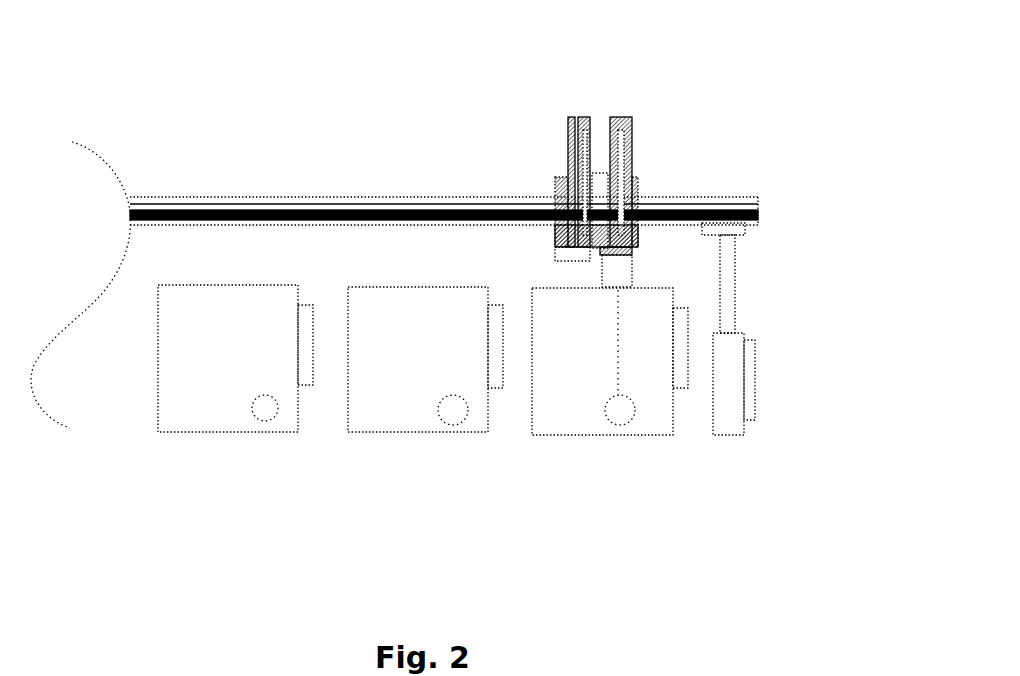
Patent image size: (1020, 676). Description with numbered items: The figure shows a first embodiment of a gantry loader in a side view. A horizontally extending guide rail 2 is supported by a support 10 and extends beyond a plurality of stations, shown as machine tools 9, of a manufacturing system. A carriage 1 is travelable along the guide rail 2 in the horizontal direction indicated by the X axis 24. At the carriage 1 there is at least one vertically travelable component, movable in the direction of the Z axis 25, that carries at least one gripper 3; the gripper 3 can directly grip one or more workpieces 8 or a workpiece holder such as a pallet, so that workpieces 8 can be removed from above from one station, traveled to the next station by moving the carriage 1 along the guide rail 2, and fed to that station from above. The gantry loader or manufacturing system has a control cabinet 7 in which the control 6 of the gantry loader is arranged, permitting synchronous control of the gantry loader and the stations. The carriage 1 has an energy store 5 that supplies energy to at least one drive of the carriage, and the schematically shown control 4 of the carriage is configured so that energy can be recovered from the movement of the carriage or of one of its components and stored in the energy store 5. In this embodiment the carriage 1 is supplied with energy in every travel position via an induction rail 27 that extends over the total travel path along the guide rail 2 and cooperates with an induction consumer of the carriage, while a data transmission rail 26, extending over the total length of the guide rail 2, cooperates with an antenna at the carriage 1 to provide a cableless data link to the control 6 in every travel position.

The carriage 1 is at (791, 67).
The guide rail 2 is at (444, 136).
The gripper 3 is at (755, 269).
The control of the carriage 4 is at (633, 166).
The energy store 5 is at (597, 172).
The control of the gantry loader 6 is at (777, 381).
The control cabinet 7 is at (786, 490).
The workpiece 8 is at (717, 421).
The machine tool 9 is at (423, 415).
The support 10 is at (780, 253).
The X axis 24 is at (440, 182).
The Z axis 25 is at (540, 145).
The data transmission rail 26 is at (84, 247).
The induction rail 27 is at (444, 127).